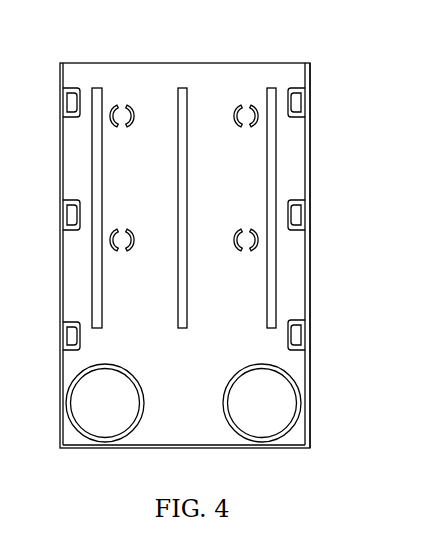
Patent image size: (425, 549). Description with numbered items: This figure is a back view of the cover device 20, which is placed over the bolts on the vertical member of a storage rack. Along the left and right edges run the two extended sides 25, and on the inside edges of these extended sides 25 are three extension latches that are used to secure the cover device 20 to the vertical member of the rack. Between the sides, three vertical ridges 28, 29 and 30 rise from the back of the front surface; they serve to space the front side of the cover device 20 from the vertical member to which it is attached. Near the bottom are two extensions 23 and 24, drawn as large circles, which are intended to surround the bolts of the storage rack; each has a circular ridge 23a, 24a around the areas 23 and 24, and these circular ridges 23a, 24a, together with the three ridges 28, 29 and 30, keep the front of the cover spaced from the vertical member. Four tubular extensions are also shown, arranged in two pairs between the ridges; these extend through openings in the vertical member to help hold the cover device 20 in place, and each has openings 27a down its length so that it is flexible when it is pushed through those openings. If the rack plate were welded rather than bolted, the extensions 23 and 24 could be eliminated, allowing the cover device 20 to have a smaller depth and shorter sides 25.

The cover device 20 is at (277, 478).
The extension 23 is at (122, 441).
The circular ridge 23a is at (68, 383).
The extension 24 is at (290, 432).
The circular ridge 24a is at (294, 385).
The extended sides 25 is at (310, 150).
The openings 27a is at (122, 252).
The ridge 28 is at (102, 90).
The ridge 29 is at (182, 88).
The ridge 30 is at (270, 88).